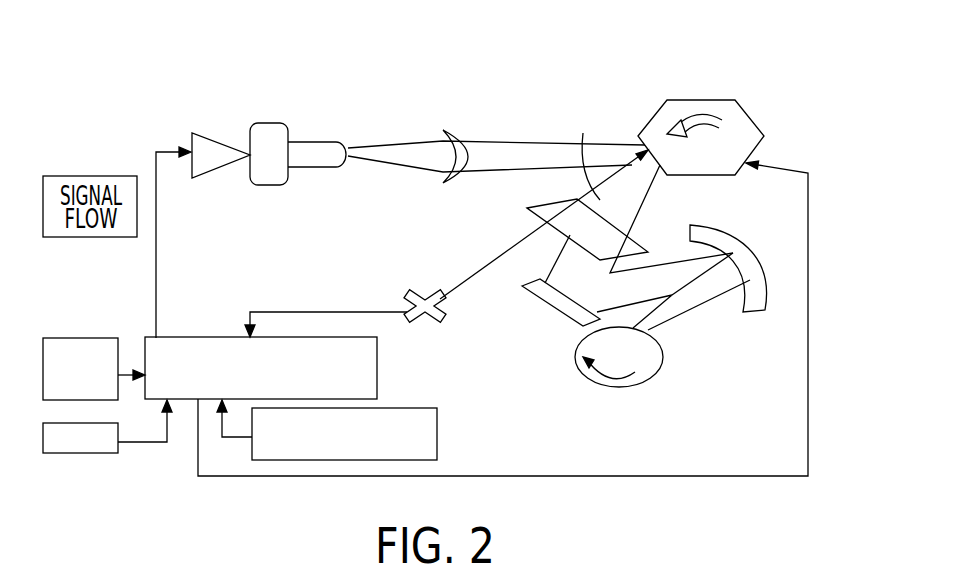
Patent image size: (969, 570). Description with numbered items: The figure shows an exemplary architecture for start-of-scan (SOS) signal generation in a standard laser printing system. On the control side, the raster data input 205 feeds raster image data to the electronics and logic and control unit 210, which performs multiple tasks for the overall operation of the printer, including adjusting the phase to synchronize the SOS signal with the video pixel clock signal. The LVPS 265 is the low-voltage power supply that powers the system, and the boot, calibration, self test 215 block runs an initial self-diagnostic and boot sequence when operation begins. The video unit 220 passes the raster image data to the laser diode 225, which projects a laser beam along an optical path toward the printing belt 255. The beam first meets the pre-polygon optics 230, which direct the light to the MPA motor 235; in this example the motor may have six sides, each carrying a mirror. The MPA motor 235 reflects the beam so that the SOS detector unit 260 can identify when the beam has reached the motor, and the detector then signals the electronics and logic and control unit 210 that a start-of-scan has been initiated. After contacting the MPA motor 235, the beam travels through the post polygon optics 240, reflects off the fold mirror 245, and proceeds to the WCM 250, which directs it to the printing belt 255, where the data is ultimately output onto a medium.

The raster data input 205 is at (92, 337).
The electronics and logic and control unit 210 is at (378, 375).
The boot, calibration, self test 215 is at (437, 447).
The video unit 220 is at (210, 133).
The laser diode 225 is at (310, 141).
The pre-polygon optics 230 is at (452, 140).
The MPA motor 235 is at (747, 115).
The post polygon optics 240 is at (581, 130).
The fold mirror 245 is at (540, 300).
The WCM 250 is at (760, 256).
The printing belt 255 is at (641, 387).
The SOS detector unit 260 is at (410, 297).
The LVPS 265 is at (88, 455).